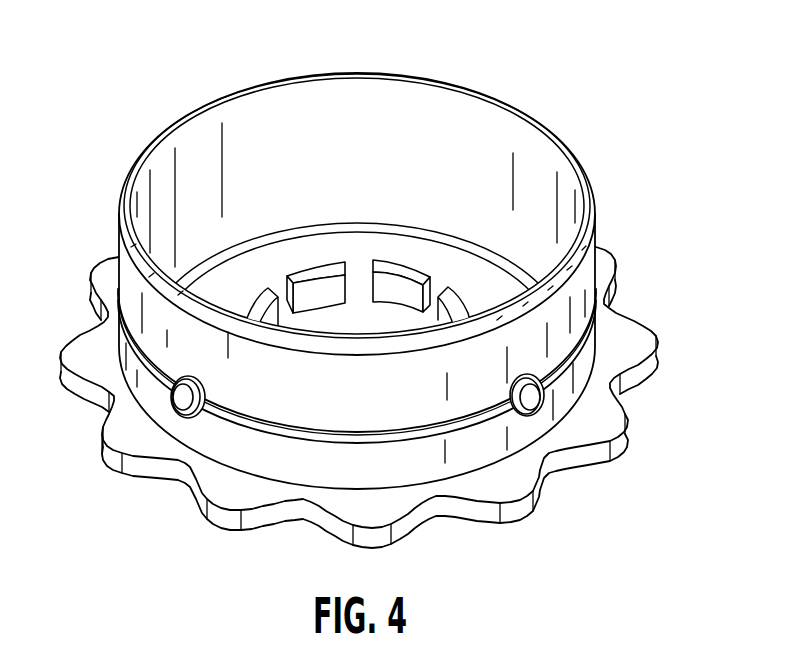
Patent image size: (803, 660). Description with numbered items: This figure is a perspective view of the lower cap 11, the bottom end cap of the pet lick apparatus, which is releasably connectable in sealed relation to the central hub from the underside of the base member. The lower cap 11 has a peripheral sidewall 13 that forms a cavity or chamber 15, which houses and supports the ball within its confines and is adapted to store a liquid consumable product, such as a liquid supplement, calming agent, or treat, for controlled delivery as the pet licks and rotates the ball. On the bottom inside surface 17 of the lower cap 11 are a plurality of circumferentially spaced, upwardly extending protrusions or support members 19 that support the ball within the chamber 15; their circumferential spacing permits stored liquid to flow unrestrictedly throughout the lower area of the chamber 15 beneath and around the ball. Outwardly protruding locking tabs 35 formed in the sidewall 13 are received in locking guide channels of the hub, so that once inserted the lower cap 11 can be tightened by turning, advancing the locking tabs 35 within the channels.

The lower cap 11 is at (383, 275).
The peripheral sidewall 13 is at (495, 97).
The chamber 15 is at (207, 200).
The bottom inside surface 17 is at (254, 263).
The support members 19 is at (397, 263).
The locking tab 35 is at (641, 372).